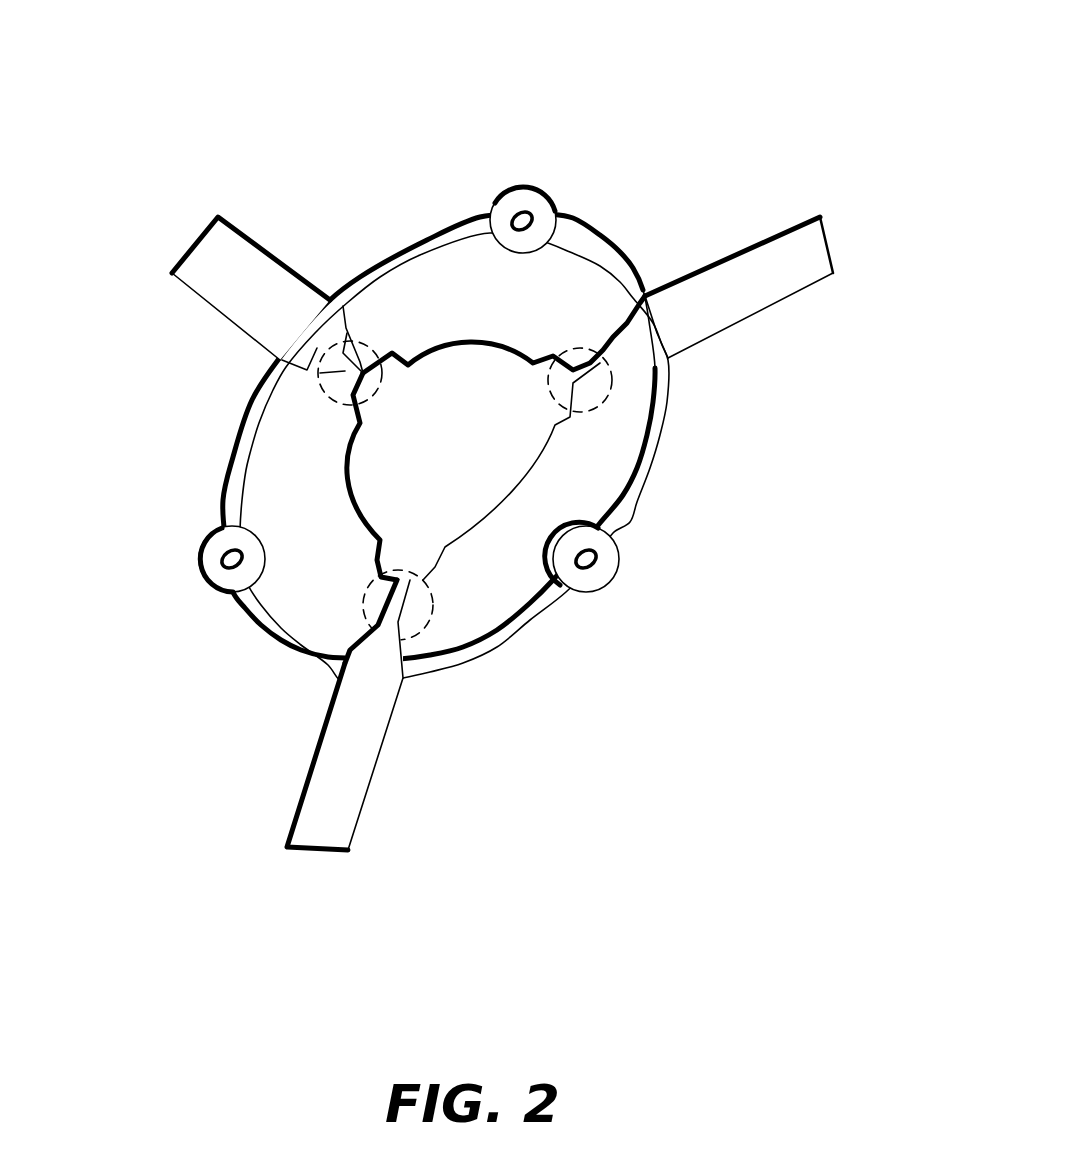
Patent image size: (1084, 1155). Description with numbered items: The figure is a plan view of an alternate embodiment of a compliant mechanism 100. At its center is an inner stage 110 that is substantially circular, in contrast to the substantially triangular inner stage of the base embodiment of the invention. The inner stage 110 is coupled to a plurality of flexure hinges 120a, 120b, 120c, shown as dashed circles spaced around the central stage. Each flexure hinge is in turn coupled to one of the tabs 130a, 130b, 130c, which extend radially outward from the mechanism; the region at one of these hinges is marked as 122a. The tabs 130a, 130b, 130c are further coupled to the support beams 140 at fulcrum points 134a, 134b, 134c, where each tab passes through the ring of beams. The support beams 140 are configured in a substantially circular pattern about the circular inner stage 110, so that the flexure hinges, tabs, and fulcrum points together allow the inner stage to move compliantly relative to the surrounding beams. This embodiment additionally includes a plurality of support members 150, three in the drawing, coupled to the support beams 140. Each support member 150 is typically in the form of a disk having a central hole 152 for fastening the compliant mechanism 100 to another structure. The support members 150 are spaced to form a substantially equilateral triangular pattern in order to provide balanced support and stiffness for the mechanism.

The compliant mechanism 100 is at (700, 97).
The inner stage 110 is at (512, 471).
The flexure hinge 120a is at (405, 345).
The flexure hinge 120b is at (578, 343).
The flexure hinge 120c is at (433, 587).
The lug edge / tab 122a is at (345, 371).
The tab 130a is at (222, 252).
The tab 130b is at (818, 245).
The tab 130c is at (332, 835).
The fulcrum point 134a is at (314, 337).
The fulcrum point 134b is at (668, 292).
The fulcrum point 134c is at (378, 670).
The support beams 140 is at (238, 441).
The support member 150 is at (538, 186).
The central hole 152 is at (508, 213).